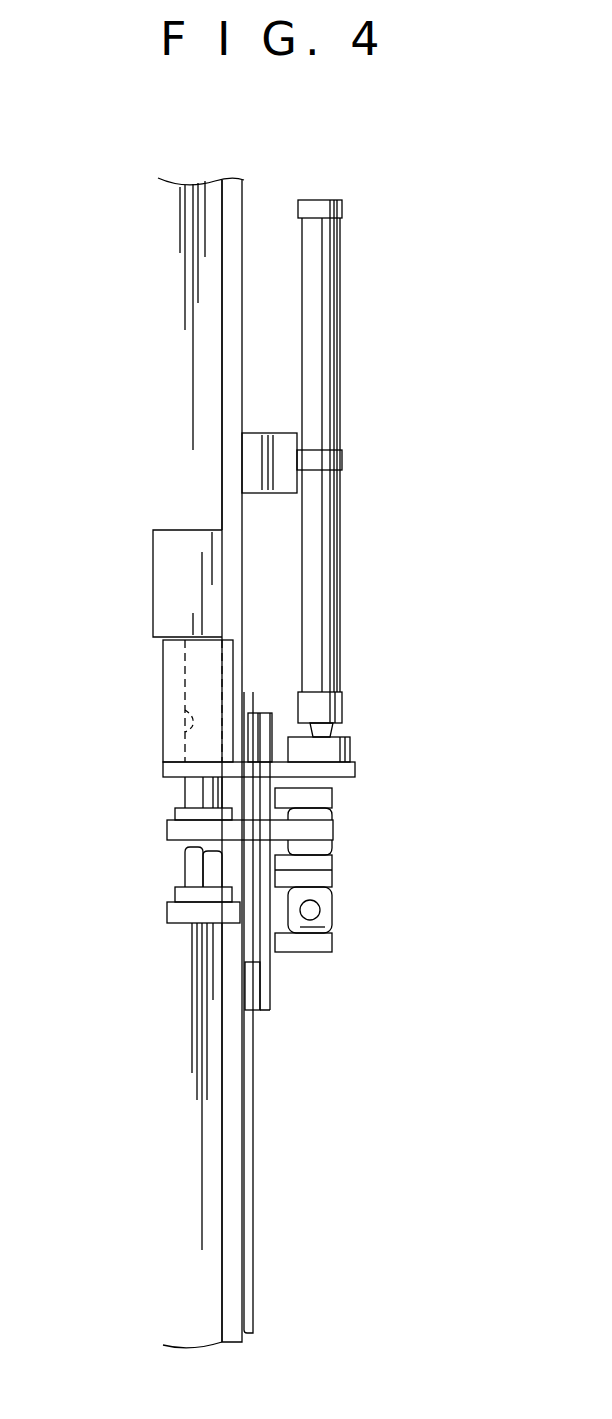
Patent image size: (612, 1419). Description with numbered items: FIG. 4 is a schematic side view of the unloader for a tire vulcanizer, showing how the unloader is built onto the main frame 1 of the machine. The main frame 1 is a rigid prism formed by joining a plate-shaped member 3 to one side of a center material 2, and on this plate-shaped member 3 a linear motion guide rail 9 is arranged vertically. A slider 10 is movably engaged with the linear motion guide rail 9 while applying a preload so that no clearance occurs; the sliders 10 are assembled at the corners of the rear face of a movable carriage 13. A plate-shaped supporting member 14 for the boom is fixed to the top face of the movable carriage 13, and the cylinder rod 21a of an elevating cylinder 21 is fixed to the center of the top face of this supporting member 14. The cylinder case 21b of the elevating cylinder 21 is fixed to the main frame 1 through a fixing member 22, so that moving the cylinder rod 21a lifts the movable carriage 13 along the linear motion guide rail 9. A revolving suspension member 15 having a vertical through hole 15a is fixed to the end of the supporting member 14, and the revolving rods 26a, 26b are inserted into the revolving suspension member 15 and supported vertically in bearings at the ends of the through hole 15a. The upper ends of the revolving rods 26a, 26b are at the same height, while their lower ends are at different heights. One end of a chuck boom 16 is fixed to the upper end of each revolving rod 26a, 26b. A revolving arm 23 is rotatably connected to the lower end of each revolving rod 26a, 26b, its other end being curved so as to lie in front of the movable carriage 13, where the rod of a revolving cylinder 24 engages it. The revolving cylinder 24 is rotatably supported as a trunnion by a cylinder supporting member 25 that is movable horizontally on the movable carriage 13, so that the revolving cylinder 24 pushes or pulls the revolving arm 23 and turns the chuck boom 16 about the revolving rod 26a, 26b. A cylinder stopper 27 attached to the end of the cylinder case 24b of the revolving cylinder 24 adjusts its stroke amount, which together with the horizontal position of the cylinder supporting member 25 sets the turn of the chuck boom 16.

The main frame 1 is at (249, 189).
The center material 2 is at (192, 200).
The plate-shaped member 3 is at (243, 277).
The linear motion guide rail 9 is at (250, 1280).
The slider 10 is at (258, 712).
The movable carriage 13 is at (268, 963).
The supporting member for the boom 14 is at (356, 768).
The revolving suspension member 15 is at (166, 672).
The through hole 15a is at (190, 722).
The chuck boom 16 is at (157, 568).
The elevating cylinder 21 is at (339, 325).
The cylinder rod 21a is at (334, 736).
The cylinder case 21b is at (331, 512).
The fixing member 22 is at (259, 440).
The revolving arm 23 is at (168, 832).
The revolving cylinder 24 is at (332, 843).
The cylinder case 24b is at (326, 928).
The cylinder supporting member 25 is at (325, 800).
The revolving rod 26a is at (188, 870).
The revolving rod 26b is at (186, 793).
The cylinder stopper 27 is at (313, 908).